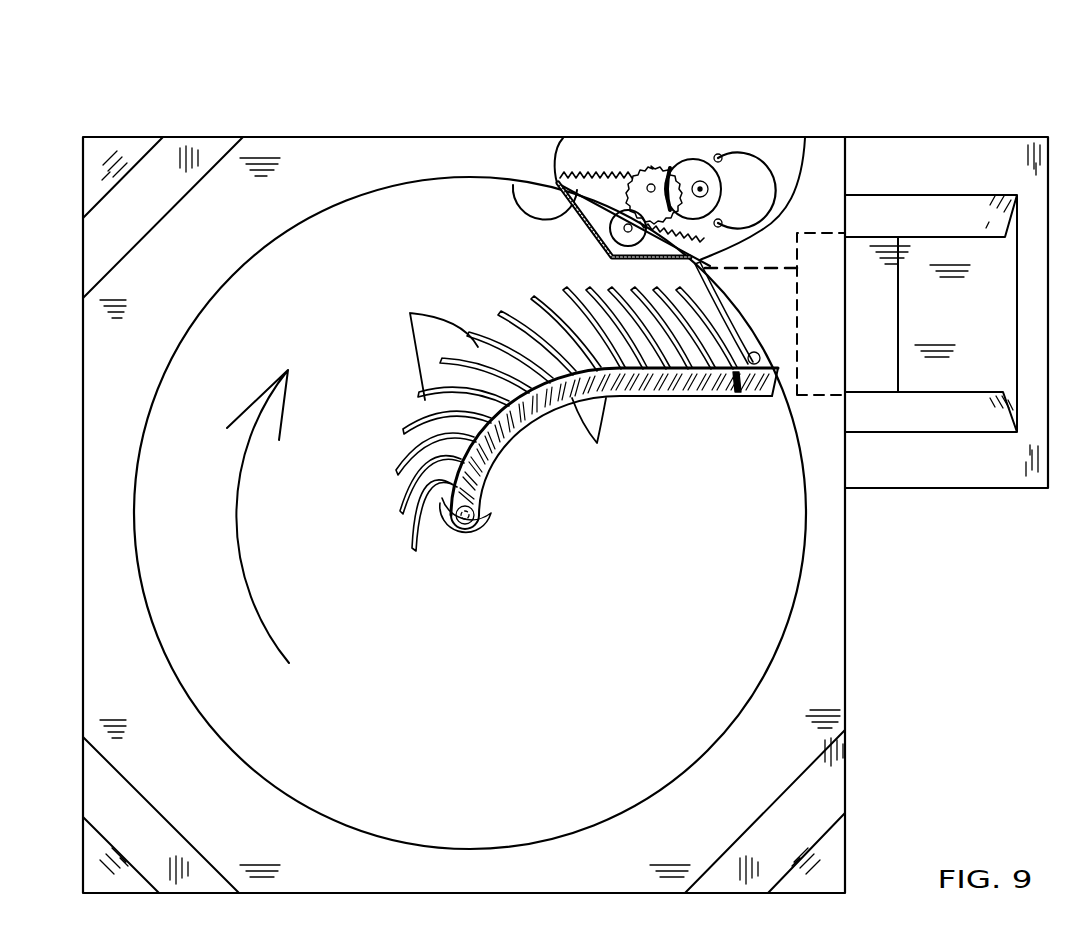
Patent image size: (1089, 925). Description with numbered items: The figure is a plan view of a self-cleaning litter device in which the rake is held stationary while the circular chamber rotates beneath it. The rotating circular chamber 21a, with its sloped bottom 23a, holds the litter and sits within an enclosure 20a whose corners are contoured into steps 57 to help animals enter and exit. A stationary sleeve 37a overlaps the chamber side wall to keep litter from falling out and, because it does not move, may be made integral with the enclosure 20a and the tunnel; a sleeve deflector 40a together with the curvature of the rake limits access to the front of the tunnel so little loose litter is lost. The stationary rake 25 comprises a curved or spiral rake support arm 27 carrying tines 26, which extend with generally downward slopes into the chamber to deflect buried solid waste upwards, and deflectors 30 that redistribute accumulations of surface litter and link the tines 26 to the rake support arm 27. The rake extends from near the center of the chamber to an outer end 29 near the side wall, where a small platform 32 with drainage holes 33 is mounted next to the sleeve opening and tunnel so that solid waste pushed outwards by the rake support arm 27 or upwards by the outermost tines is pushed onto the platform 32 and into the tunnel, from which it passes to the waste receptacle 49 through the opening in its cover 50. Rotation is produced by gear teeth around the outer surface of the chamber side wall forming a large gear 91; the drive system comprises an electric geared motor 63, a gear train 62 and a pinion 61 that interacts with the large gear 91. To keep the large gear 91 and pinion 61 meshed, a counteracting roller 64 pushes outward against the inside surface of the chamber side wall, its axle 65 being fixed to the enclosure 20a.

The steps 57 is at (135, 150).
The enclosure 20a is at (340, 165).
The stationary sleeve 37a is at (385, 186).
The sleeve deflector 40a is at (514, 183).
The large gear 91 is at (578, 170).
The counteracting roller 64 is at (607, 182).
The axle 65 is at (628, 224).
The pinion 61 is at (655, 184).
The gear train 62 is at (701, 181).
The electric geared motor 63 is at (740, 160).
The platform 32 is at (760, 351).
The drainage holes 33 is at (737, 386).
The outer end 29 is at (770, 396).
The rake support arm 27 is at (514, 446).
The deflectors 30 is at (595, 442).
The tines 26 is at (425, 341).
The rake 25 is at (488, 485).
The rotating circular chamber 21a is at (350, 538).
The sloped bottom 23a is at (574, 484).
The waste receptacle 49 is at (934, 470).
The cover 50 is at (993, 470).